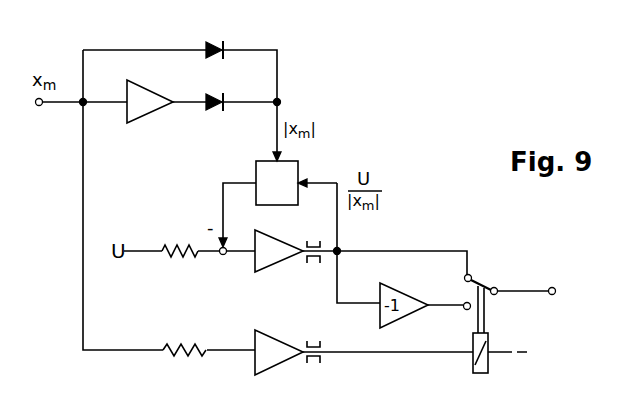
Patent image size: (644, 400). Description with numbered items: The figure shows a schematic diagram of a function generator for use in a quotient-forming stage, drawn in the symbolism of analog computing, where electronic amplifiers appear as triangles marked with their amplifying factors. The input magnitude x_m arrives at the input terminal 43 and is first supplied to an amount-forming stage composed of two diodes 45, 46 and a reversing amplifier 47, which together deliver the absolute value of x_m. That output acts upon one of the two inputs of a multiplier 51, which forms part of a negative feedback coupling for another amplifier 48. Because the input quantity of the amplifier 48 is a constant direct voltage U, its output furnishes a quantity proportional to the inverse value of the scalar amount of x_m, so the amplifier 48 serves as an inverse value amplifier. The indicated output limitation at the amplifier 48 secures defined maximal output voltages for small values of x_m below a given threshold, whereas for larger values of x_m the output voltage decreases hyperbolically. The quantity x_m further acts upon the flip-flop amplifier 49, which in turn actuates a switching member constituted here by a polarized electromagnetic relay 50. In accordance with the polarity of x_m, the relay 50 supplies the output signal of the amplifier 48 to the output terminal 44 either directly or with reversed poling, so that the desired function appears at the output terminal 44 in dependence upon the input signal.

The input terminal 43 is at (26, 102).
The output terminal 44 is at (523, 290).
The diode 45 is at (212, 42).
The diode 46 is at (212, 95).
The reversing amplifier 47 is at (148, 117).
The amplifier 48 is at (275, 267).
The flip-flop amplifier 49 is at (273, 335).
The polarized electromagnetic relay 50 is at (488, 362).
The multiplier 51 is at (257, 172).